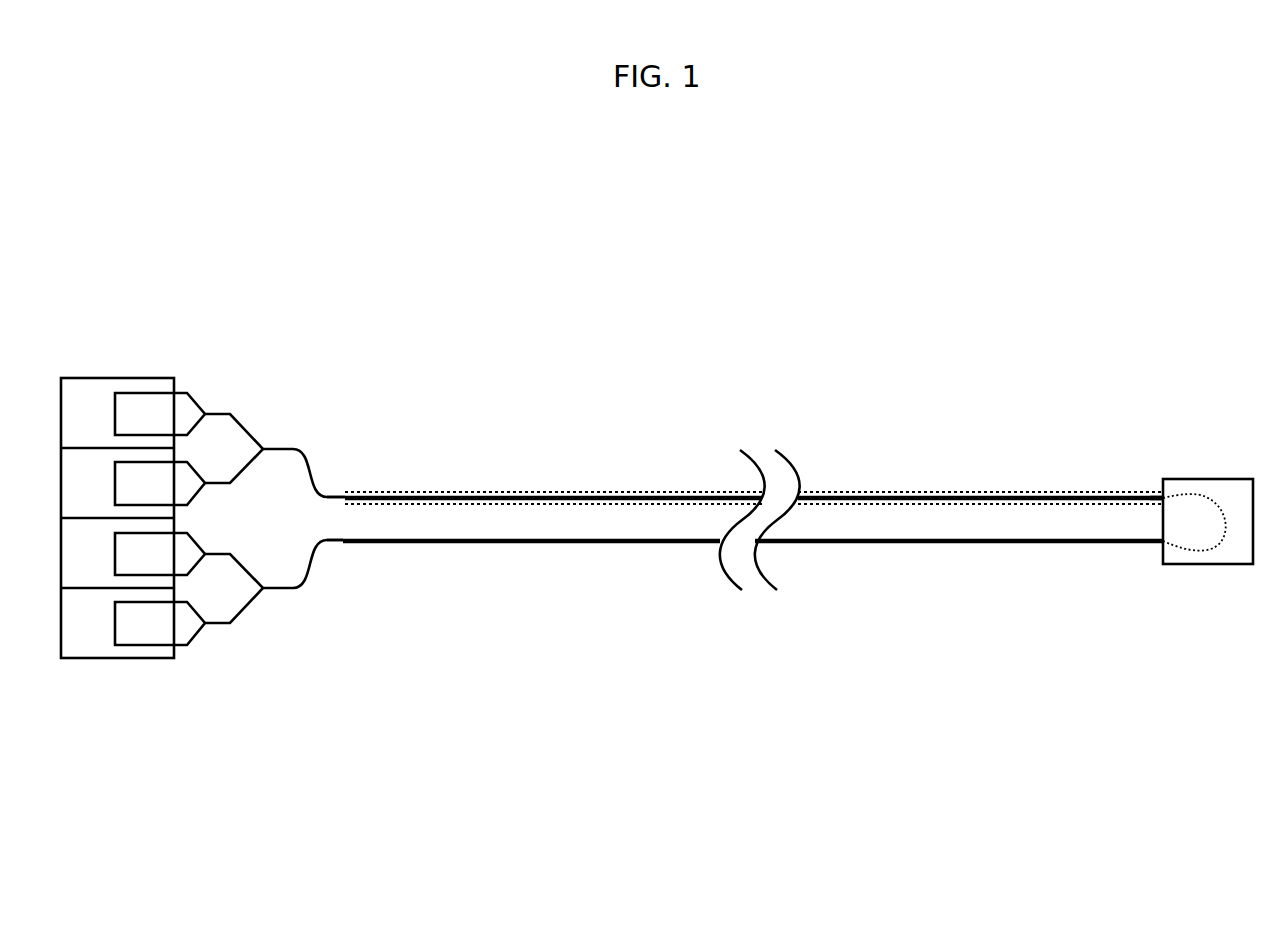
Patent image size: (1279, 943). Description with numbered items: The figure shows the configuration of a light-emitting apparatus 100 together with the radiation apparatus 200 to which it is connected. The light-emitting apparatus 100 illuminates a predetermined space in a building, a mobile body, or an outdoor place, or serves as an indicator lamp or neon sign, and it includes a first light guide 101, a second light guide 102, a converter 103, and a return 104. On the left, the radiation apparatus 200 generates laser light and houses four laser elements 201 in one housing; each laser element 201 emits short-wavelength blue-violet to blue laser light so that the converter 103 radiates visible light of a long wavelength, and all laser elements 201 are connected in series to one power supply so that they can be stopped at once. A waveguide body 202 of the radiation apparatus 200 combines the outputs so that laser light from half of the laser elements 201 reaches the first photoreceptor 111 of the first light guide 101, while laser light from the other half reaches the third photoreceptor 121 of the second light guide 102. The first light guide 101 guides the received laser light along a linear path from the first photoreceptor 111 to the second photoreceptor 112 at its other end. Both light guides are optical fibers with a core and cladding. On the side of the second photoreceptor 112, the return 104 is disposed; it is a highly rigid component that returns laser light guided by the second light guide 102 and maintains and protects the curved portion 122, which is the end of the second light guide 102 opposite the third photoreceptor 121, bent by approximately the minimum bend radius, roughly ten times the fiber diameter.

The light-emitting apparatus 100 is at (958, 392).
The first light guide 101 is at (552, 490).
The second light guide 102 is at (587, 545).
The converter 103 is at (835, 492).
The return 104 is at (1203, 564).
The first photoreceptor 111 is at (340, 495).
The second photoreceptor 112 is at (1162, 497).
The third photoreceptor 121 is at (343, 545).
The curved portion 122 is at (1215, 500).
The radiation apparatus 200 is at (113, 378).
The laser element 201 is at (195, 398).
The waveguide body 202 is at (338, 663).